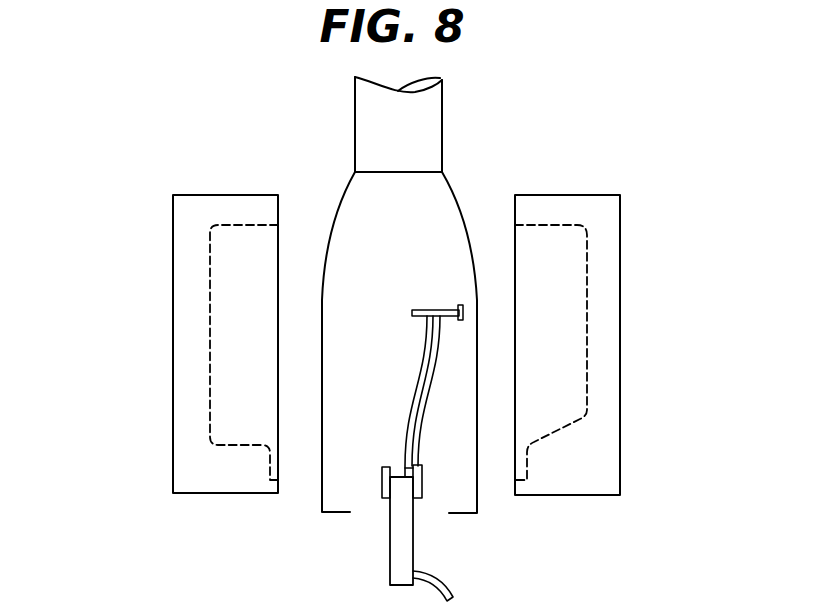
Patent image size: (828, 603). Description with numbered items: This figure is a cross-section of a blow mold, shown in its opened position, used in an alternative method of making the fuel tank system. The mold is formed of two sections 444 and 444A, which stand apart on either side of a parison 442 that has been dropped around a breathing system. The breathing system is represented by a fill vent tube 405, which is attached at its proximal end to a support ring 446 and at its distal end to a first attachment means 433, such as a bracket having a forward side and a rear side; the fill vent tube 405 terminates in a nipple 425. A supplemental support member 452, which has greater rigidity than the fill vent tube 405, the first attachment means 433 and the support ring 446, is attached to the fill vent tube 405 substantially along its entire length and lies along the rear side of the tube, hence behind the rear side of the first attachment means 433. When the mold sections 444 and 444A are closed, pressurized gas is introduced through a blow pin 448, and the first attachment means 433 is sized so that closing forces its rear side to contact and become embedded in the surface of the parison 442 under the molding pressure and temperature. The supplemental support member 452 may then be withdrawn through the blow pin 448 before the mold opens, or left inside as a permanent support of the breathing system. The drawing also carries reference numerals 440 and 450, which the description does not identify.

The neck of bag 440 is at (442, 118).
The parison 442 is at (461, 207).
The mold section 444 is at (183, 230).
The mold section 444A is at (620, 250).
The nipple 425 is at (412, 312).
The first attachment means 433 is at (437, 310).
The fill vent tube 405 is at (422, 365).
The supplemental support member 452 is at (440, 368).
The support ring 446 is at (382, 494).
The blow pin 448 is at (413, 538).
The outlet tube 450 is at (447, 578).